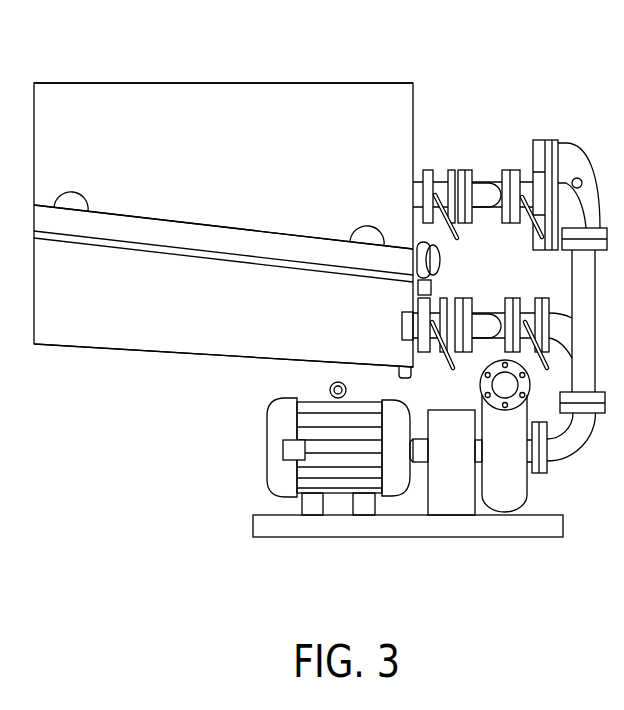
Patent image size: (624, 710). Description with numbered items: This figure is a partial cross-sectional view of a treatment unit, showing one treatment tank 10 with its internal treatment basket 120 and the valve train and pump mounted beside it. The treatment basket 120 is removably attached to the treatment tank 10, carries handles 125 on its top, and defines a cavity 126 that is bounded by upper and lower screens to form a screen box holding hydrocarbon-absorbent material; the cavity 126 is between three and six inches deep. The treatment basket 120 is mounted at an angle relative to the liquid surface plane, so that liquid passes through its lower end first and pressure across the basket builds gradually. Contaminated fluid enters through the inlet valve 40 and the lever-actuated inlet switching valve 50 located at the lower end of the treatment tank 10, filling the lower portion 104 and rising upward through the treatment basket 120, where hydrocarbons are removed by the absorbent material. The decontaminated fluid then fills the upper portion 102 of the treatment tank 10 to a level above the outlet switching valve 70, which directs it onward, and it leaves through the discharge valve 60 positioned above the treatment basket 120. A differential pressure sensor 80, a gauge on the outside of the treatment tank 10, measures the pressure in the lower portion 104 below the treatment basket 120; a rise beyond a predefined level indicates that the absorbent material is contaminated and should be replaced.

The treatment tank 10 is at (229, 80).
The upper portion 102 is at (88, 99).
The lower portion 104 is at (87, 328).
The treatment basket 120 is at (212, 222).
The handles 125 is at (76, 192).
The cavity 126 is at (146, 218).
The differential pressure sensor 80 is at (424, 243).
The outlet switching valve 70 is at (446, 172).
The discharge valve 60 is at (510, 170).
The inlet switching valve 50 is at (445, 298).
The inlet valve 40 is at (510, 298).